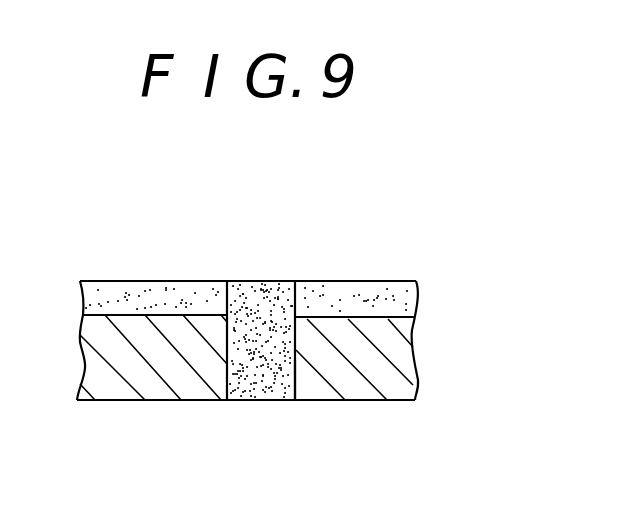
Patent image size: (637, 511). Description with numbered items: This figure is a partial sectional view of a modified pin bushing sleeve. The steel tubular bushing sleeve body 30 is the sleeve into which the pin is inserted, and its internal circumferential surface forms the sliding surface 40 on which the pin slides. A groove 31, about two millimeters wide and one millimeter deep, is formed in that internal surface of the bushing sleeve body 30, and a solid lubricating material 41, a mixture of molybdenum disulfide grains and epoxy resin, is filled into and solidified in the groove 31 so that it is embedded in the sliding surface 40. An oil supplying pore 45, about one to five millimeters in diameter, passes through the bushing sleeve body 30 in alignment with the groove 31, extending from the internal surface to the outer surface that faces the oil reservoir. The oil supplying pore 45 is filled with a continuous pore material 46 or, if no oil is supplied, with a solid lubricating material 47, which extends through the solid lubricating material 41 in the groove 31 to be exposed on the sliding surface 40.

The bushing sleeve body 30 is at (403, 355).
The groove 31 is at (378, 316).
The sliding surface 40 is at (168, 281).
The solid lubricating material 41 is at (352, 284).
The oil supply pore 45 is at (295, 370).
The continuous pore material 46 is at (267, 286).
The solid lubricating material 47 is at (277, 314).